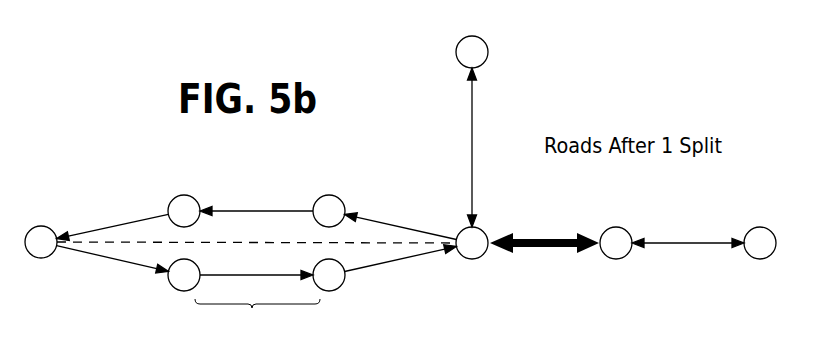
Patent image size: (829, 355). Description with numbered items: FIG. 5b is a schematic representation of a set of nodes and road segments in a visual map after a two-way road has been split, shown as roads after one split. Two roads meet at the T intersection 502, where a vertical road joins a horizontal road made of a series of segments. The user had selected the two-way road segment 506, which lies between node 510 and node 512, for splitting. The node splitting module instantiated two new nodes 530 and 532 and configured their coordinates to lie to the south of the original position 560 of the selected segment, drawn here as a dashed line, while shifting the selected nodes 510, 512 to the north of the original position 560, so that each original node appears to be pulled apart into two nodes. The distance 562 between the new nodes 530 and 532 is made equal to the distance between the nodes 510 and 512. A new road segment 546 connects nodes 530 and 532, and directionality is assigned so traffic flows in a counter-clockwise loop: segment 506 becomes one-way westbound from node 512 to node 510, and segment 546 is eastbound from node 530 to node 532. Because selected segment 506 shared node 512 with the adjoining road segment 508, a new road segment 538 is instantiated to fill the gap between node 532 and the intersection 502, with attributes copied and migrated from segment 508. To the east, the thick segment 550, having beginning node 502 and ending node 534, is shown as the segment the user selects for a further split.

The T intersection 502 is at (477, 260).
The road segment 506 is at (249, 210).
The road segment 508 is at (412, 228).
The node 510 is at (168, 200).
The node 512 is at (344, 198).
The new node 530 is at (171, 288).
The new node 532 is at (342, 287).
The ending node 534 is at (617, 260).
The new road segment 538 is at (415, 262).
The new road segment 546 is at (254, 274).
The segment 550 is at (545, 238).
The original position 560 is at (203, 250).
The distance 562 is at (257, 315).